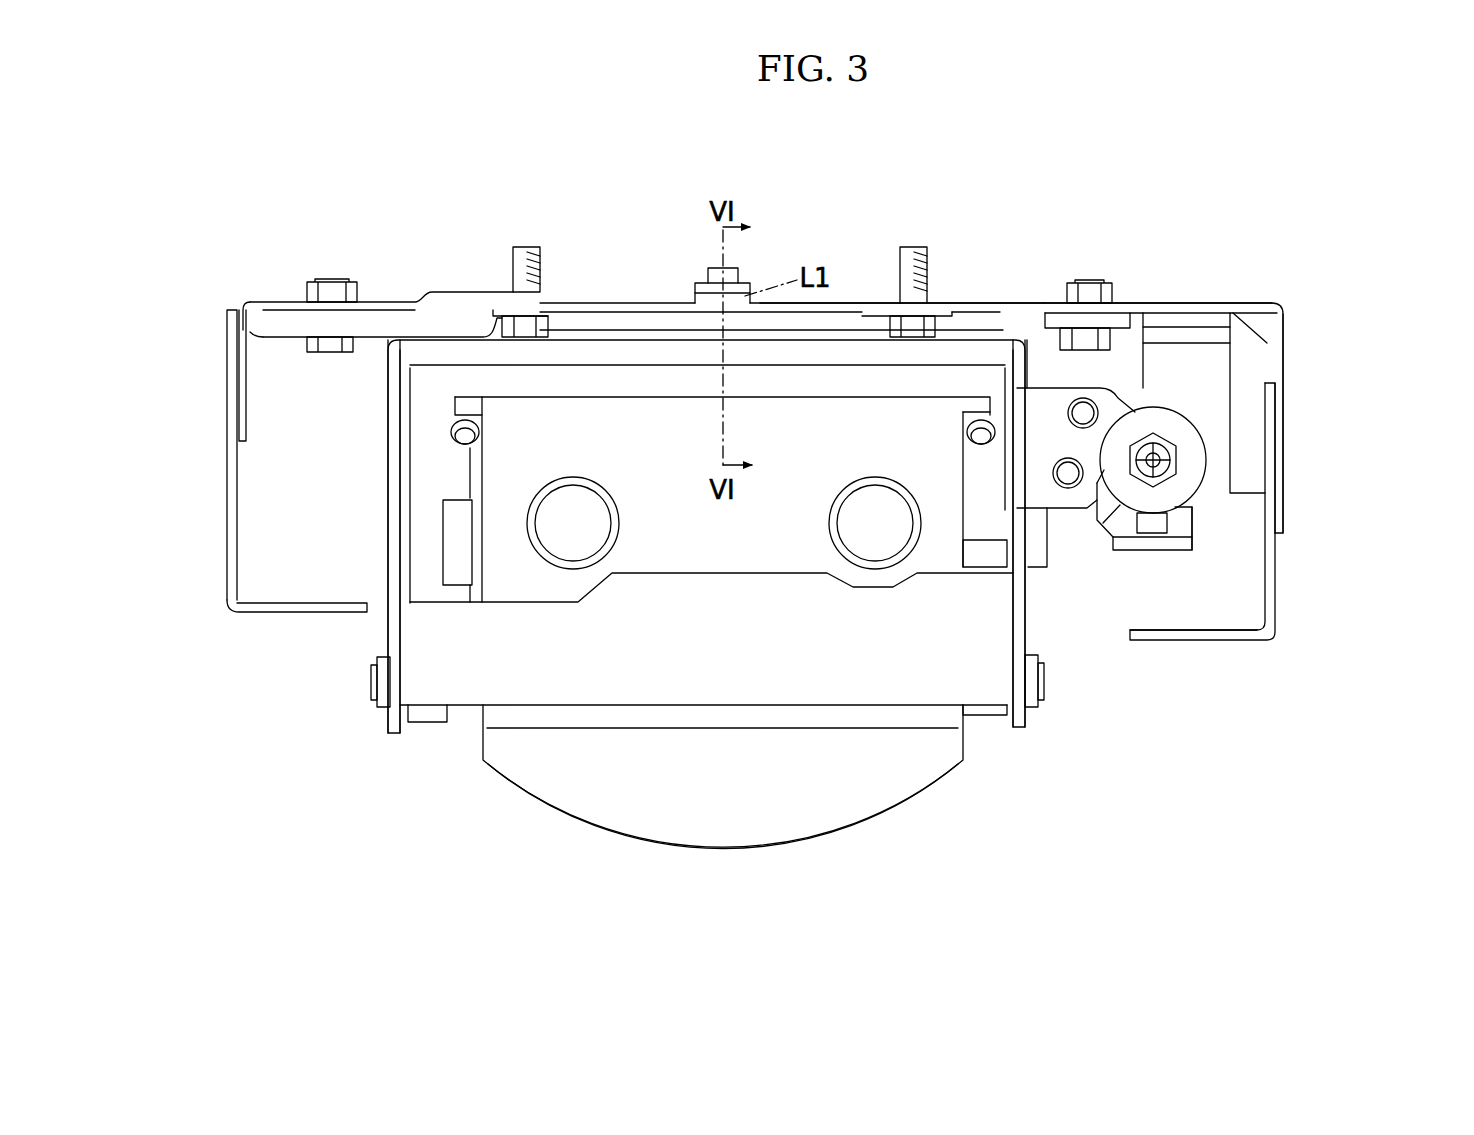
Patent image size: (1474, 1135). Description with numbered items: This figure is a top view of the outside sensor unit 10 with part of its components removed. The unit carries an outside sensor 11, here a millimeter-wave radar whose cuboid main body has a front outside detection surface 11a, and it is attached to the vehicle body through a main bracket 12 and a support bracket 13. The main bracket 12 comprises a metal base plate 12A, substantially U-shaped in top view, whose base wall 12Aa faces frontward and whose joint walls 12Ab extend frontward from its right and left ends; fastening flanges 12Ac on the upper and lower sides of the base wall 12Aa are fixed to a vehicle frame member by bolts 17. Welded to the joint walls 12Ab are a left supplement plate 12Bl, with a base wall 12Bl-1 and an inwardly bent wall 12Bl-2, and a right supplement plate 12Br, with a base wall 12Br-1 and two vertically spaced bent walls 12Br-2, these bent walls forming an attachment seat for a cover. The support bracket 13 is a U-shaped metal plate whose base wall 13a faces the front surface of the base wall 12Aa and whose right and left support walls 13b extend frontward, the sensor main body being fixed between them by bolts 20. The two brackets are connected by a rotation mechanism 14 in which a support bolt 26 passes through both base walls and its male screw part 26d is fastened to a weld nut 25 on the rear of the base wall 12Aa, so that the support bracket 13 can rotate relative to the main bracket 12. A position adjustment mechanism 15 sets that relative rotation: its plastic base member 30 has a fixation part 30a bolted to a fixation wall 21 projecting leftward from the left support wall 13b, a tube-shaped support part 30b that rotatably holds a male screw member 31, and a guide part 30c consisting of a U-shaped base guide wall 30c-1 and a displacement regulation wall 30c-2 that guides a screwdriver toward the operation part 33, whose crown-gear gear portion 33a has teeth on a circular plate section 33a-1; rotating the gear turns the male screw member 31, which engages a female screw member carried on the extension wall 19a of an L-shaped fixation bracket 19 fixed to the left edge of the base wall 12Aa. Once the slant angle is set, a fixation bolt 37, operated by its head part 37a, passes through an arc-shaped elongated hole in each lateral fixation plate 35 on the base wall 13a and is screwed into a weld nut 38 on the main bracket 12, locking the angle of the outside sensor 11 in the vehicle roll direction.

The outside sensor unit 10 is at (1184, 180).
The outside sensor 11 is at (755, 815).
The outside detection surface 11a is at (720, 850).
The main bracket 12 is at (761, 476).
The base plate 12A is at (1230, 301).
The base wall 12Aa is at (850, 301).
The joint wall 12Ab is at (239, 390).
The fastening flange 12Ac is at (500, 314).
The left supplement plate 12Bl is at (1273, 543).
The base wall 12Bl-1 is at (1285, 531).
The bent wall 12Bl-2 is at (1207, 642).
The right supplement plate 12Br is at (236, 505).
The base wall 12Br-1 is at (227, 515).
The bent wall 12Br-2 is at (265, 614).
The support bracket 13 is at (588, 322).
The base wall 13a is at (612, 330).
The support wall 13b is at (386, 622).
The rotation mechanism 14 is at (744, 262).
The position adjustment mechanism 15 is at (1202, 518).
The bolt 17 is at (525, 246).
The fixation bracket 19 is at (1259, 361).
The extension wall 19a is at (1230, 370).
The bolt 20 is at (374, 684).
The fixation wall 21 is at (1063, 505).
The weld nut 25 is at (695, 293).
The support bolt 26 is at (705, 222).
The male screw part 26d is at (718, 267).
The base member 30 is at (1230, 438).
The fixation part 30a is at (1122, 405).
The support part 30b is at (1097, 478).
The guide part 30c is at (1281, 606).
The base guide wall 30c-1 is at (1182, 510).
The displacement regulation wall 30c-2 is at (1143, 548).
The male screw member 31 is at (1200, 462).
The operation part 33 is at (1279, 545).
The gear portion 33a is at (1279, 545).
The circular plate section 33a-1 is at (1157, 507).
The fixation plate 35 is at (1117, 313).
The fixation bolt 37 is at (622, 267).
The head part 37a is at (305, 345).
The weld nut 38 is at (307, 290).